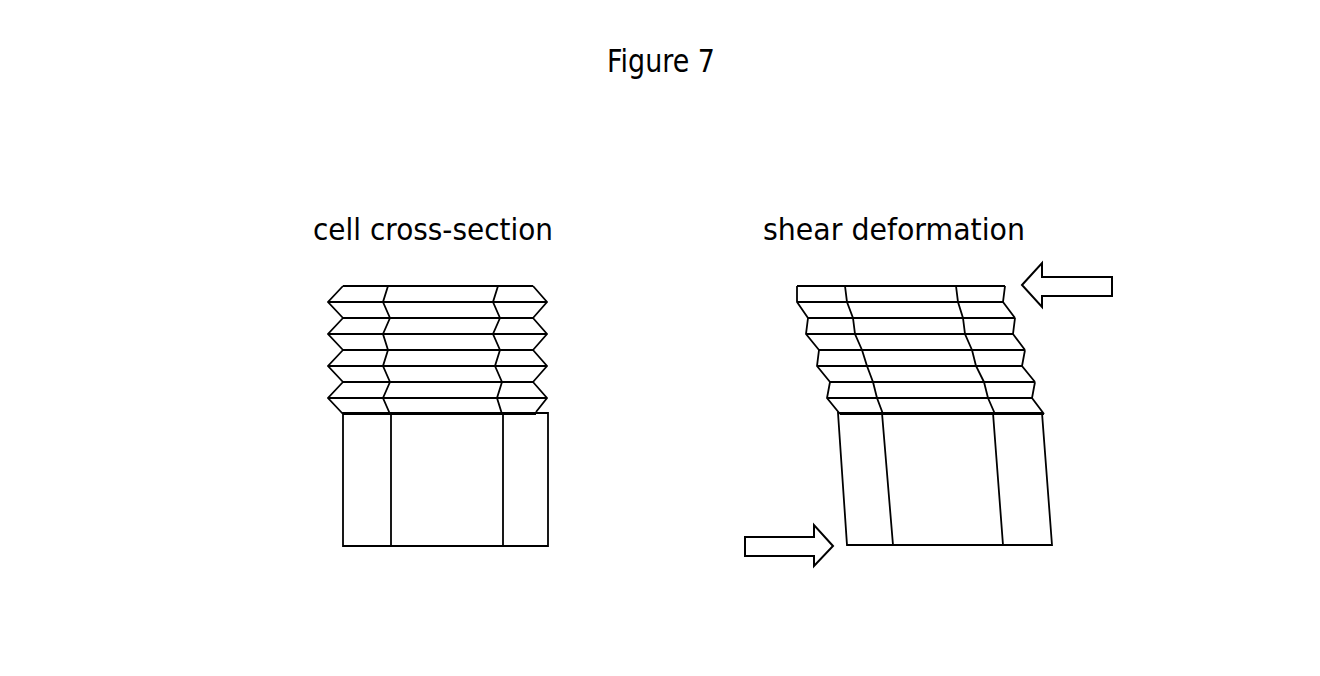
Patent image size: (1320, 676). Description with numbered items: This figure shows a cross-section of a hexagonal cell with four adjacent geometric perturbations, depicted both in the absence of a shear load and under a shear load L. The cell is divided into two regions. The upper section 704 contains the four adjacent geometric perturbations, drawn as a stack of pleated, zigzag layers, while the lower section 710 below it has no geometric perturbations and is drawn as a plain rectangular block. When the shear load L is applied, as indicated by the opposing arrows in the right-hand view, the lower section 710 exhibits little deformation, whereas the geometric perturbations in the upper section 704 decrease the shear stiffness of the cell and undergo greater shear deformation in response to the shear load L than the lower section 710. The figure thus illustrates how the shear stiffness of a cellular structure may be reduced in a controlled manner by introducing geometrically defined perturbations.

The upper section 704 is at (562, 292).
The lower section 710 is at (562, 414).
The shear load L is at (1083, 264).